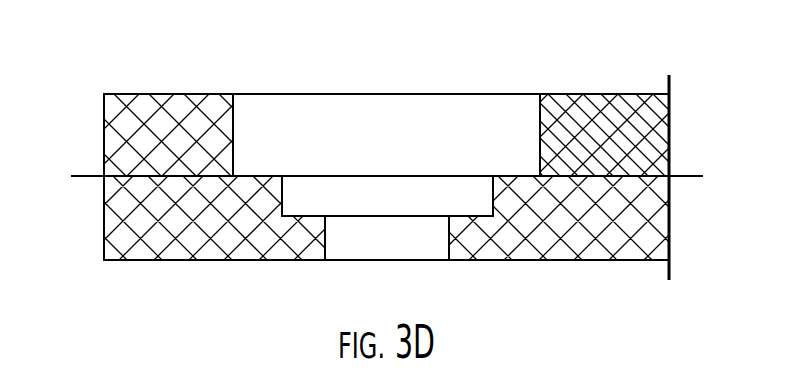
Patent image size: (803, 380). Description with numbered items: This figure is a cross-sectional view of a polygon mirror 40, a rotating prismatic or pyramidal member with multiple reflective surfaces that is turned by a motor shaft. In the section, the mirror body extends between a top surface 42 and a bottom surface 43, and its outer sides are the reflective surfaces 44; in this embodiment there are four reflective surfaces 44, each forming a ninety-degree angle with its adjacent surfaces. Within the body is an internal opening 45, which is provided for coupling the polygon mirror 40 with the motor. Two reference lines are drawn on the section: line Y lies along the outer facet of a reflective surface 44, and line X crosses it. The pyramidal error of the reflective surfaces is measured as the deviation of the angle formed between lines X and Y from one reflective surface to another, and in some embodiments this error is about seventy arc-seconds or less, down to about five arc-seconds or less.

The polygon mirror 40 is at (179, 42).
The top surface 42 is at (121, 94).
The bottom surface 43 is at (190, 260).
The reflective surfaces 44 is at (104, 149).
The internal opening 45 is at (327, 146).
The line X is at (578, 176).
The line Y is at (669, 213).